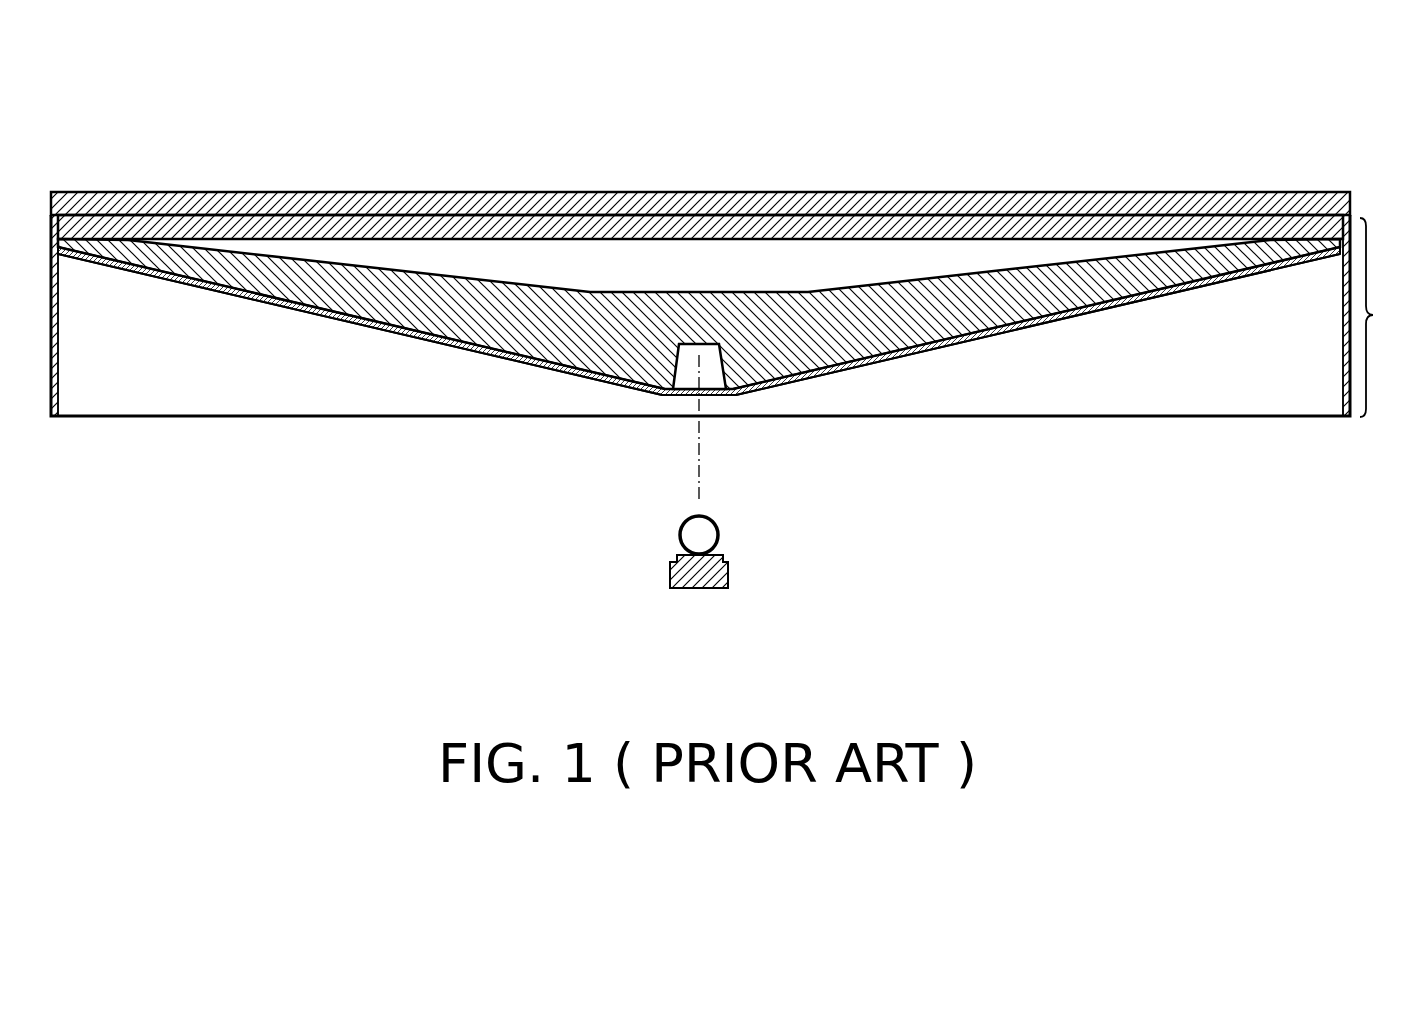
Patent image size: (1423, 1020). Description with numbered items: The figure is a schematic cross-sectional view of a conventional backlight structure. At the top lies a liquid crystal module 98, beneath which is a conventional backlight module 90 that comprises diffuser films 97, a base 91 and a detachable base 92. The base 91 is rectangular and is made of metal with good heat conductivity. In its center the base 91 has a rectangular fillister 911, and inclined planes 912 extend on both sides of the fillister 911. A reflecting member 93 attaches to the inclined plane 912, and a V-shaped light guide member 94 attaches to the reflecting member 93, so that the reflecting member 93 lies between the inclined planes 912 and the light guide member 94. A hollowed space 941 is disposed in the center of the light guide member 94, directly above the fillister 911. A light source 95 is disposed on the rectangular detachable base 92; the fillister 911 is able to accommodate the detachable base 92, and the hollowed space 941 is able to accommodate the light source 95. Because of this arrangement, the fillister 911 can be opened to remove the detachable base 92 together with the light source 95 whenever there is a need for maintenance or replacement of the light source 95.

The backlight module 90 is at (1412, 331).
The base 91 is at (1172, 397).
The fillister 911 is at (687, 394).
The inclined planes 912 is at (462, 348).
The detachable base 92 is at (728, 575).
The reflecting member 93 is at (348, 323).
The light guide member 94 is at (177, 260).
The hollowed space 941 is at (713, 372).
The light source 95 is at (700, 537).
The diffuser films 97 is at (387, 232).
The liquid crystal module 98 is at (303, 203).